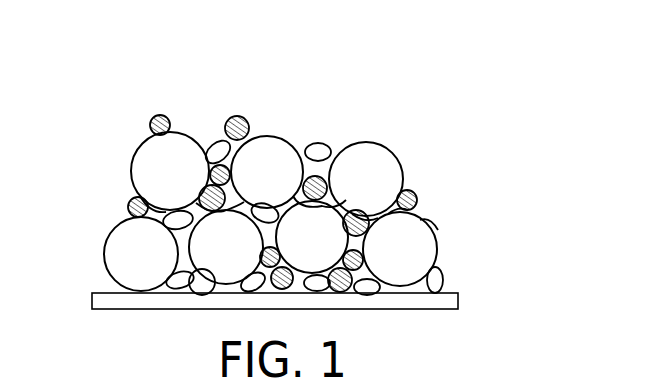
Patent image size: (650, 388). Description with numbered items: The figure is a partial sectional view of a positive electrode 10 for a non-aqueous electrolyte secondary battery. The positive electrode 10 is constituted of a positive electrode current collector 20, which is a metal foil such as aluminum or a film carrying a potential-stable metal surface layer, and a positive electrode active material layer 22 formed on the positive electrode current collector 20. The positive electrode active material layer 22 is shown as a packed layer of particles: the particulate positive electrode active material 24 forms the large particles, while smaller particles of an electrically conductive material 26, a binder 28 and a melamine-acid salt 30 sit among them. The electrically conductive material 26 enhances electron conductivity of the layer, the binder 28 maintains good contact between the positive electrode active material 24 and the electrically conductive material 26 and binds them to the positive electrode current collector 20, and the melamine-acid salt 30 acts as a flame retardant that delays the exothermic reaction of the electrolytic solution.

The positive electrode 10 is at (125, 99).
The positive electrode current collector 20 is at (452, 300).
The positive electrode active material layer 22 is at (323, 174).
The positive electrode active material 24 is at (368, 158).
The electrically conductive material 26 is at (318, 150).
The binder 28 is at (238, 117).
The melamine-acid salt 30 is at (160, 116).